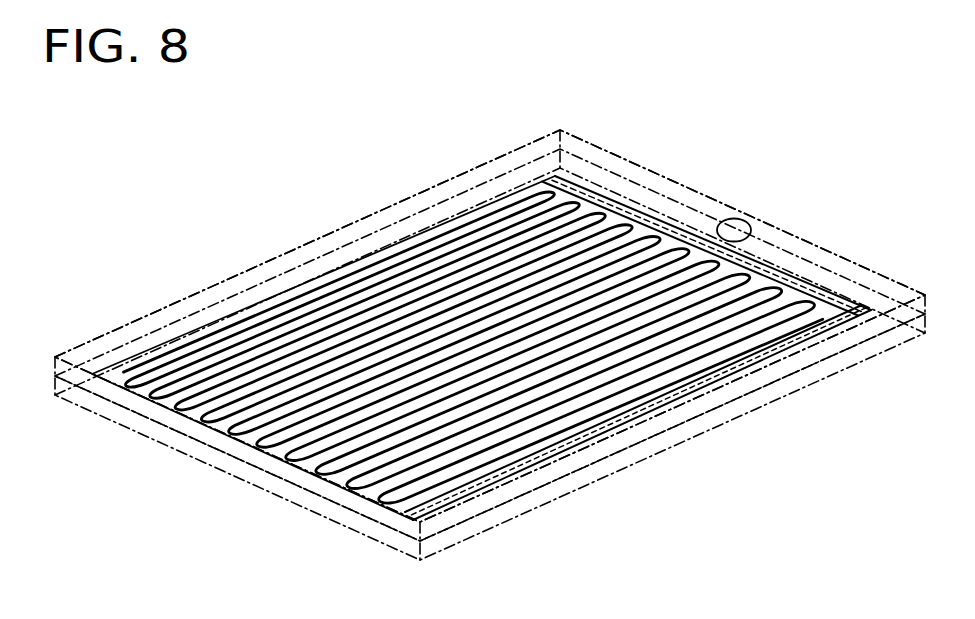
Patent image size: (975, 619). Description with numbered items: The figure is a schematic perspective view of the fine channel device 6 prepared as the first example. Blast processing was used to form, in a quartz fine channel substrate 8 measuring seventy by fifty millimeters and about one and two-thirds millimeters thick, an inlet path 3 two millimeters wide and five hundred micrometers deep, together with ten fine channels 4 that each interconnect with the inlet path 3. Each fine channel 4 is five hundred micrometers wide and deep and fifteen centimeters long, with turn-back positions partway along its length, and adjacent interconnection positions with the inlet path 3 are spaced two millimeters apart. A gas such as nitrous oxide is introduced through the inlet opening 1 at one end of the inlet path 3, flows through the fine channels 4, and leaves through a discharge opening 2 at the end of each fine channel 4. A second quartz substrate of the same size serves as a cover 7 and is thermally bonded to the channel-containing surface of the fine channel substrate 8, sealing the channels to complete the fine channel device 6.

The inlet opening 1 is at (757, 207).
The discharge opening 2 is at (222, 464).
The inlet path 3 is at (826, 270).
The fine channels 4 is at (342, 260).
The fine channel device 6 is at (48, 357).
The cover 7 is at (430, 170).
The fine channel substrate 8 is at (764, 419).